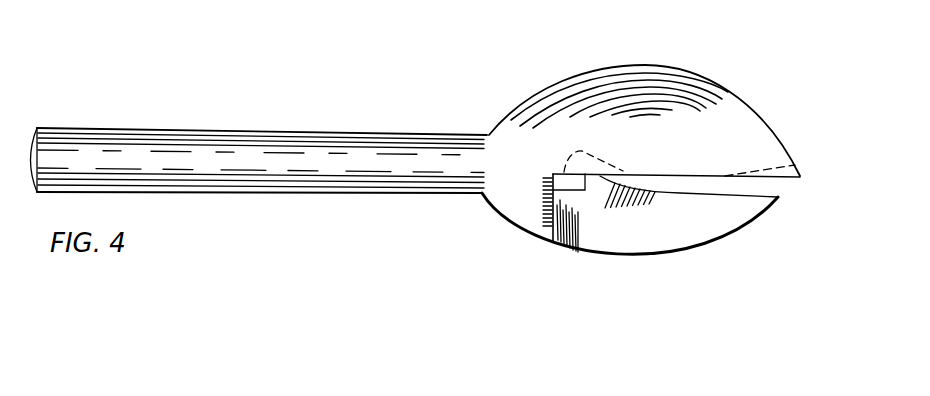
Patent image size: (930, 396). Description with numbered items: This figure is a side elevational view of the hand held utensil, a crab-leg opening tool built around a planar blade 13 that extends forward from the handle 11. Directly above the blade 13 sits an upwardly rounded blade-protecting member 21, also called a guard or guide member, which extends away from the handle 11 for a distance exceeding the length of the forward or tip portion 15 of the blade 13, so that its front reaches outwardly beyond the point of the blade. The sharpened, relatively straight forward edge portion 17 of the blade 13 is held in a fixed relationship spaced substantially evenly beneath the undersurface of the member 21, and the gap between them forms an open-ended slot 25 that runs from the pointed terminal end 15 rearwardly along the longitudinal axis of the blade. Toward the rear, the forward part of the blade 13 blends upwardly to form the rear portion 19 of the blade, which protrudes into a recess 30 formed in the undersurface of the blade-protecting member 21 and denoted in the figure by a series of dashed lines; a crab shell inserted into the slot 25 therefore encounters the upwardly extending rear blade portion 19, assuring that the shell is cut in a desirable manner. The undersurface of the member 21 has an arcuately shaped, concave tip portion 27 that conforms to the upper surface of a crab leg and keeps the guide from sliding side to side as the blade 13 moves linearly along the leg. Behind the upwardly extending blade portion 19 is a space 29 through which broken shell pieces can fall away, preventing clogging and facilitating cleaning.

The handle 11 is at (257, 160).
The blade 13 is at (662, 229).
The forward tip portion of the blade 15 is at (773, 197).
The forward edge portion of the blade 17 is at (702, 198).
The rear portion of the blade 19 is at (591, 185).
The blade-protecting member 21 is at (727, 122).
The slot 25 is at (783, 192).
The arcuately shaped tip portion 27 is at (766, 165).
The space 29 is at (574, 184).
The recess 30 is at (576, 152).